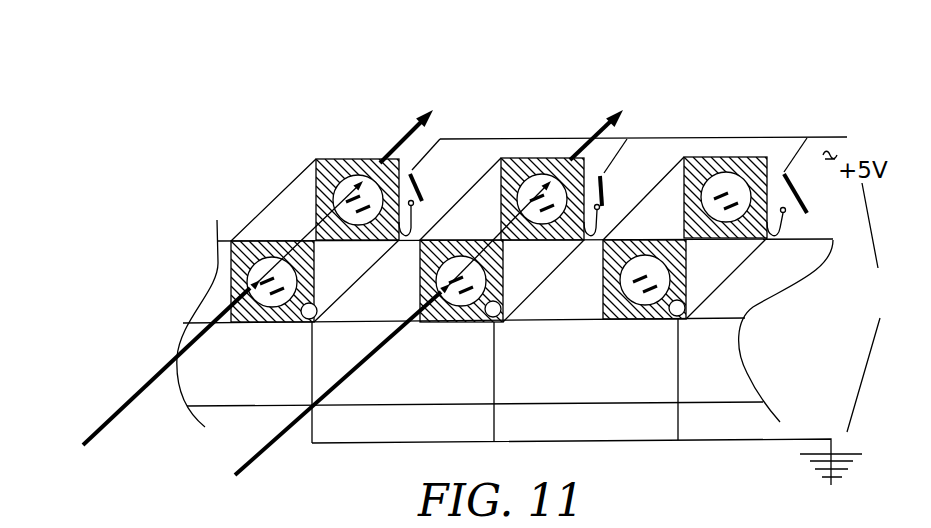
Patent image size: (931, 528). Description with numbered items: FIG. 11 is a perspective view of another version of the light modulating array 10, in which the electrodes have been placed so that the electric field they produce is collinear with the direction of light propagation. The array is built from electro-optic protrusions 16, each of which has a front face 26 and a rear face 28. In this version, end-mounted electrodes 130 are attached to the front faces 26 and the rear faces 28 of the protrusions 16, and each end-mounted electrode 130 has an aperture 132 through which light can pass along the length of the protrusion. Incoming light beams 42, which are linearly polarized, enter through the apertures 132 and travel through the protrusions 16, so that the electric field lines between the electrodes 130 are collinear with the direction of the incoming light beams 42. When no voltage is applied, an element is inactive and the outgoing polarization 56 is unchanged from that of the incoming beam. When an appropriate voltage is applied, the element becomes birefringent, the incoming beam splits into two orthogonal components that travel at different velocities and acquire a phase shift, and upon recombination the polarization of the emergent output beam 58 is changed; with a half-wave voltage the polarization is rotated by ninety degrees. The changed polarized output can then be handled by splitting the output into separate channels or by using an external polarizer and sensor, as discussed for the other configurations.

The light modulating array 10 is at (184, 239).
The protrusion 16 is at (280, 215).
The front face 26 is at (288, 325).
The rear face 28 is at (340, 150).
The incoming light beams 42 is at (267, 445).
The outgoing polarization 56 is at (398, 138).
The output beam 58 is at (597, 130).
The end-mounted electrode 130 is at (693, 230).
The aperture 132 is at (717, 187).